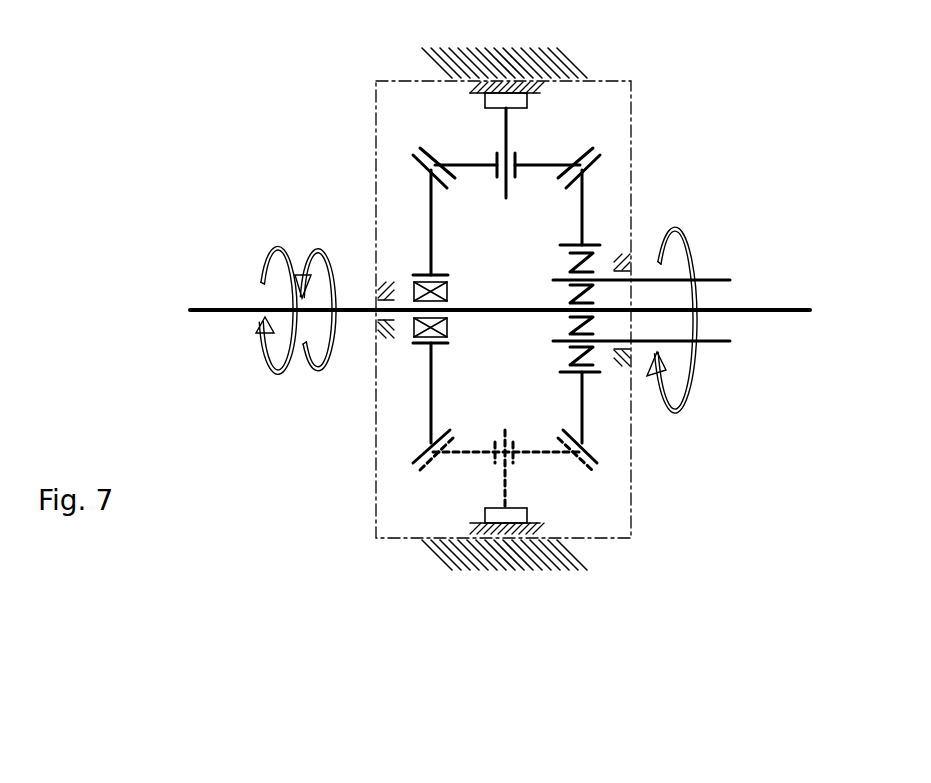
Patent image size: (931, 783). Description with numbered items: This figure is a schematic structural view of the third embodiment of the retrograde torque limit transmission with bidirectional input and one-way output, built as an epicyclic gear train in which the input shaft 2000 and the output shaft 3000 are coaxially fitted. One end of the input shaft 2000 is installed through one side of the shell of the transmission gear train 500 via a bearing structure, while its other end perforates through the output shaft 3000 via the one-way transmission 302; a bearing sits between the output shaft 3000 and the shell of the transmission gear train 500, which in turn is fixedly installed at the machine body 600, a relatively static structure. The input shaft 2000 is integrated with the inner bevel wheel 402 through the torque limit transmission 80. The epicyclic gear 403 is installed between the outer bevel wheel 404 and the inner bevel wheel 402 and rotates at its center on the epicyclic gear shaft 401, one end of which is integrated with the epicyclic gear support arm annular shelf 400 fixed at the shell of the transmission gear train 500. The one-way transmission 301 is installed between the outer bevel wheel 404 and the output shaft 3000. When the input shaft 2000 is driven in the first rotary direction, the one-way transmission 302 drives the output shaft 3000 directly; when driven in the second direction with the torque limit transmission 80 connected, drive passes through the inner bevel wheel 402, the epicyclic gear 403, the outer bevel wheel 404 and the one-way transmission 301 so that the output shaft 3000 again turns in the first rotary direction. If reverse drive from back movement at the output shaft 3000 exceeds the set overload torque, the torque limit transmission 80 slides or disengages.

The machine body 600 is at (502, 70).
The shell of the transmission gear train 500 is at (375, 152).
The epicyclic gear support arm annular shelf 400 is at (490, 98).
The epicyclic gear shaft 401 is at (507, 137).
The inner bevel wheel 402 is at (427, 168).
The epicyclic gear 403 is at (450, 180).
The outer bevel wheel 404 is at (597, 168).
The one-way transmission 301 is at (568, 257).
The one-way transmission 302 is at (565, 330).
The torque limit transmission 80 is at (447, 327).
The input shaft 2000 is at (250, 307).
The output shaft 3000 is at (712, 278).